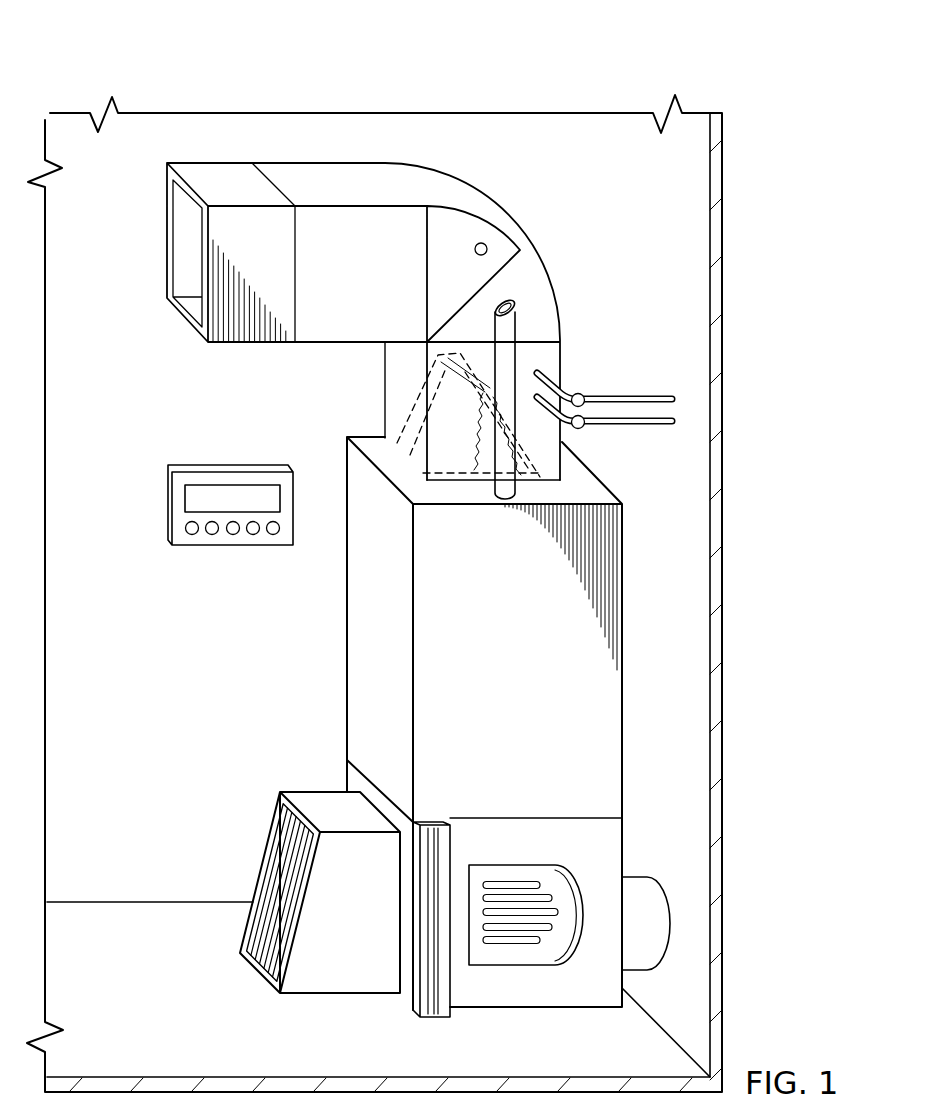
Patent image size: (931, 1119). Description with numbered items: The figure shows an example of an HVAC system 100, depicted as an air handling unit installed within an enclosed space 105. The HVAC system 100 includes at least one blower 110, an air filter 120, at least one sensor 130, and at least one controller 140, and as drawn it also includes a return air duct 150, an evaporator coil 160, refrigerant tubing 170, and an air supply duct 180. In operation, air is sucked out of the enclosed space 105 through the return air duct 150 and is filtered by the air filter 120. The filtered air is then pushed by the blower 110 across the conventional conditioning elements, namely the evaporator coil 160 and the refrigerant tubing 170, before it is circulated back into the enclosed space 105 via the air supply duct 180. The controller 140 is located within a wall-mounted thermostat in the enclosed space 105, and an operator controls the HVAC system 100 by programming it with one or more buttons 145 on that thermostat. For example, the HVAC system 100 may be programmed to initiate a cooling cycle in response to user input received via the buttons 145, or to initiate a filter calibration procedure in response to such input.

The HVAC system 100 is at (181, 71).
The enclosed space 105 is at (571, 108).
The blower 110 is at (515, 953).
The air filter 120 is at (450, 833).
The sensor 130 is at (475, 250).
The controller 140 is at (228, 470).
The buttons 145 is at (232, 535).
The return air duct 150 is at (262, 858).
The evaporator coil 160 is at (434, 404).
The refrigerant tubing 170 is at (633, 393).
The air supply duct 180 is at (171, 241).